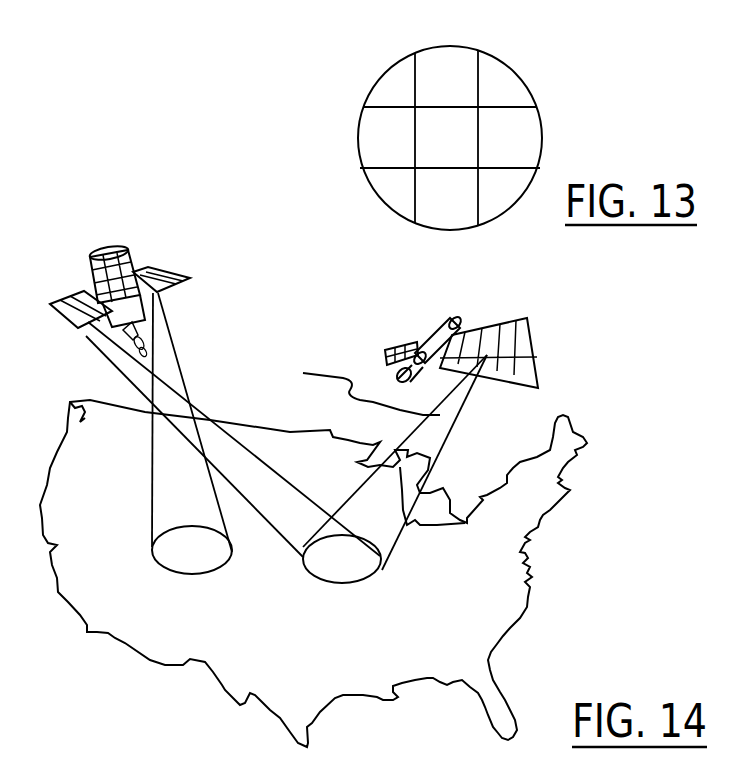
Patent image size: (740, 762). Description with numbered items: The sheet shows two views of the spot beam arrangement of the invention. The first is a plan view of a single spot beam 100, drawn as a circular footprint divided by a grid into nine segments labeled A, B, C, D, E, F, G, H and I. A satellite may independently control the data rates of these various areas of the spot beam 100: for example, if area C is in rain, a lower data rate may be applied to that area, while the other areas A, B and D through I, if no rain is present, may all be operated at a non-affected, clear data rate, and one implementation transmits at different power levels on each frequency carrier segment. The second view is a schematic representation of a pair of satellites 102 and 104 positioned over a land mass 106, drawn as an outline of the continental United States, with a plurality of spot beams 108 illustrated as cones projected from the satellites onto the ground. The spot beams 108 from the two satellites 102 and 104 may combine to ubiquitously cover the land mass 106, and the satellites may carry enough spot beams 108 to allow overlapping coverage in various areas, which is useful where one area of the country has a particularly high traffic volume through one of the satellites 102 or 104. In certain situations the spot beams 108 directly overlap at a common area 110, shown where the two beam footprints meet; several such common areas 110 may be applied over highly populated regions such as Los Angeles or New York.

In FIG. 13, the spot beam 100 is at (363, 107).
In FIG. 13, the segment A is at (397, 70).
In FIG. 13, the segment B is at (446, 58).
In FIG. 13, the segment C is at (496, 68).
In FIG. 13, the segment D is at (370, 162).
In FIG. 13, the segment E is at (468, 126).
In FIG. 13, the segment F is at (533, 129).
In FIG. 13, the segment G is at (390, 193).
In FIG. 13, the segment H is at (462, 218).
In FIG. 13, the segment I is at (496, 200).
In FIG. 14, the satellite 102 is at (88, 268).
In FIG. 14, the satellite 104 is at (529, 327).
In FIG. 14, the land mass 106 is at (470, 617).
In FIG. 14, the spot beams 108 is at (177, 363).
In FIG. 14, the common area 110 is at (382, 570).